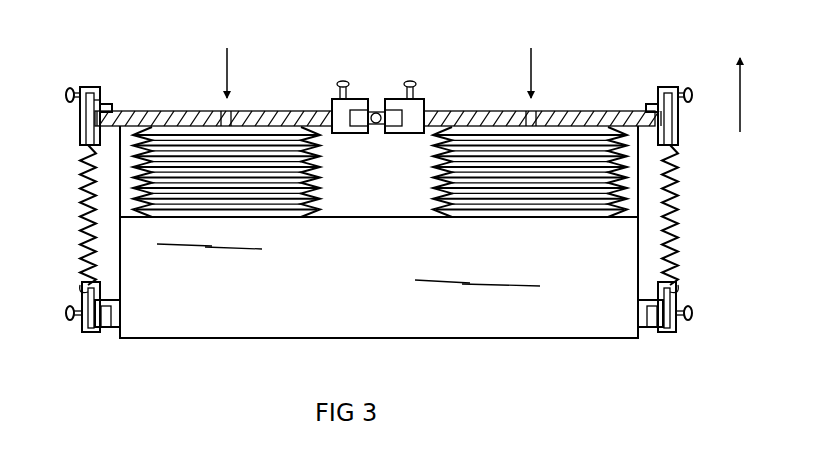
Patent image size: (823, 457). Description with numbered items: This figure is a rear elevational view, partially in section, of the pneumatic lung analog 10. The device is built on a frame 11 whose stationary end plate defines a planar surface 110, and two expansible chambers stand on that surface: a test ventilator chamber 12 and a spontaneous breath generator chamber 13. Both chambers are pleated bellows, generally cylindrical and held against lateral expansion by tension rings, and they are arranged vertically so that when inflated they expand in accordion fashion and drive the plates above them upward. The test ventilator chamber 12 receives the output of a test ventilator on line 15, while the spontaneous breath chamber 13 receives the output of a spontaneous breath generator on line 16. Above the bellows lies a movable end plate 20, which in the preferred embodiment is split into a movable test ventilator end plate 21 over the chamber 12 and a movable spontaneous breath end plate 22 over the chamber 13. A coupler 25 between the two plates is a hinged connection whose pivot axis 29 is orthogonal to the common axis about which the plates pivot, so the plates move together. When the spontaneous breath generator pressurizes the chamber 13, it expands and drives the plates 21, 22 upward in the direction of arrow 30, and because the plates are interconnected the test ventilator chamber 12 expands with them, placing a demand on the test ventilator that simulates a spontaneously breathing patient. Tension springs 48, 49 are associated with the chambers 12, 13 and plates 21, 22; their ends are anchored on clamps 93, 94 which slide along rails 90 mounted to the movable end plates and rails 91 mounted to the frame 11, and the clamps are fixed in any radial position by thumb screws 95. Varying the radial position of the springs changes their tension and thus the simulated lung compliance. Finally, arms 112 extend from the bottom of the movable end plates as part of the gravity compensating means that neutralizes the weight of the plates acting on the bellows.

The pneumatic lung analog 10 is at (670, 66).
The frame 11 is at (362, 273).
The test ventilator expansible chamber 12 is at (270, 148).
The spontaneous breath generator expansible chamber 13 is at (568, 142).
The test ventilator line 15 is at (229, 50).
The spontaneous breath generator line 16 is at (533, 50).
The movable end plate 20 is at (95, 120).
The movable test ventilator end plate 21 is at (178, 111).
The movable spontaneous breath end plate 22 is at (464, 111).
The coupler 25 is at (379, 98).
The pivot axis of coupler 29 is at (378, 123).
The arrow indicating upward direction 30 is at (744, 108).
The tension spring 48 is at (76, 205).
The tension spring 49 is at (682, 205).
The rails 90 is at (108, 104).
The rails 91 is at (115, 328).
The clamp 93 is at (88, 87).
The clamp 94 is at (84, 333).
The thumb screws 95 is at (66, 94).
The planar surface 110 is at (363, 216).
The arms 112 is at (642, 152).